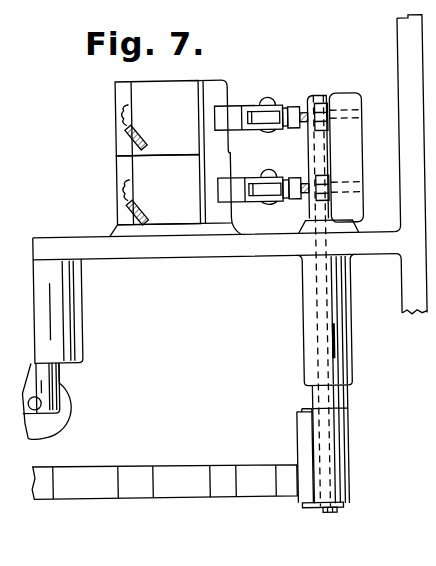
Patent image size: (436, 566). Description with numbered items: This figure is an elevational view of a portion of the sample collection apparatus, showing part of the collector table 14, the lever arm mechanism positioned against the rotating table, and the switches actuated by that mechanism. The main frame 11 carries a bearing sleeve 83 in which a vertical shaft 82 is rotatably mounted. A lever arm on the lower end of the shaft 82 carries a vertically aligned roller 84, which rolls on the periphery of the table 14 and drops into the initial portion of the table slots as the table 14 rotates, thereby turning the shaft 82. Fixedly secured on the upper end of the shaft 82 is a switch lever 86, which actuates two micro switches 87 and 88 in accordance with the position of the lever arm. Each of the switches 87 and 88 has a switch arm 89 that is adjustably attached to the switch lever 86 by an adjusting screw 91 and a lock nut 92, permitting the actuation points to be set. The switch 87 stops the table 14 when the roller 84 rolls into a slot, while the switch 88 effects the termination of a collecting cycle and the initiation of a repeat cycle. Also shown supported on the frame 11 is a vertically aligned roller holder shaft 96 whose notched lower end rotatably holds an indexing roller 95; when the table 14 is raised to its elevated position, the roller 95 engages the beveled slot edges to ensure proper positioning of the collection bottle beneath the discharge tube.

The main frame 11 is at (213, 252).
The collector table 14 is at (134, 486).
The vertical shaft 82 is at (343, 400).
The bearing sleeve 83 is at (348, 375).
The roller 84 is at (297, 438).
The switch lever 86 is at (352, 140).
The switch 87 is at (177, 124).
The switch 88 is at (177, 198).
The switch arm 89 is at (245, 110).
The adjusting screw 91 is at (312, 112).
The lock nut 92 is at (321, 105).
The indexing roller 95 is at (52, 419).
The roller holder shaft 96 is at (53, 379).